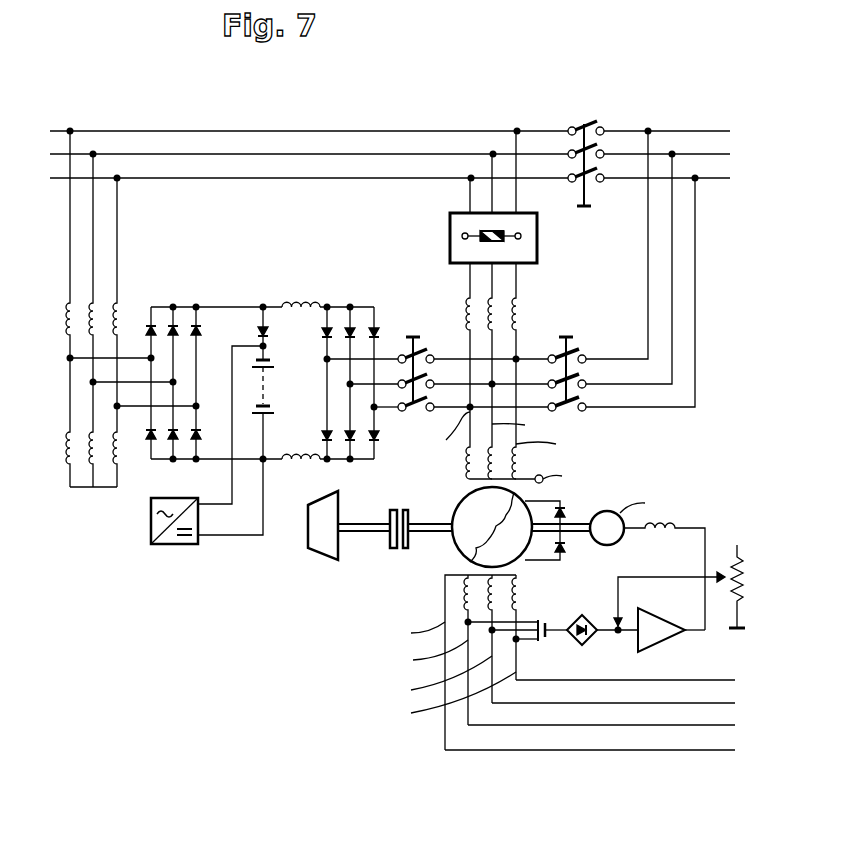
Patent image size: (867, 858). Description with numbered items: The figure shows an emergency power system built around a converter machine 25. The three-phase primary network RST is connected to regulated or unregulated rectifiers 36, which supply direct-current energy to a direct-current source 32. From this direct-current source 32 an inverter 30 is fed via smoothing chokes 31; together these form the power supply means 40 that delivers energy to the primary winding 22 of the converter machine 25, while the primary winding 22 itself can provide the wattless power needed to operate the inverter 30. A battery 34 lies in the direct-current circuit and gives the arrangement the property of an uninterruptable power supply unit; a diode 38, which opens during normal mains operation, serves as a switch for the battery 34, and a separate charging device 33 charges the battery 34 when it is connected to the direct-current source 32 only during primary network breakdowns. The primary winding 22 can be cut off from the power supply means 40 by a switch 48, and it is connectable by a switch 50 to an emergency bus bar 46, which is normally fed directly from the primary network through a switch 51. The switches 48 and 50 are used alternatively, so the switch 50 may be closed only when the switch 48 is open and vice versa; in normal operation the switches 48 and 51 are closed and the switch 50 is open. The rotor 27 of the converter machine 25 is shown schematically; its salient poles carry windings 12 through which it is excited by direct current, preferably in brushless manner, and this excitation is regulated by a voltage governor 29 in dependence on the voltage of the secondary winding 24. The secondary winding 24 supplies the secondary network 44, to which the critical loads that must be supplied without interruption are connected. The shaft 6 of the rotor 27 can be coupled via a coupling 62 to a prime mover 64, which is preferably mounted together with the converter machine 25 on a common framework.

The shaft 6 is at (362, 533).
The windings 12 is at (458, 533).
The primary winding 22 is at (468, 468).
The secondary winding 24 is at (520, 590).
The converter machine 25 is at (592, 508).
The rotor 27 is at (464, 548).
The voltage governor 29 is at (662, 632).
The inverter 30 is at (350, 304).
The smoothing chokes 31 is at (293, 302).
The direct-current source 32 is at (262, 304).
The charging device 33 is at (170, 546).
The battery 34 is at (267, 388).
The rectifiers 36 is at (174, 305).
The diode 38 is at (268, 336).
The power supply means 40 is at (210, 298).
The secondary network 44 is at (652, 756).
The emergency bus bar 46 is at (707, 127).
The switch 48 is at (421, 349).
The switch 50 is at (576, 348).
The switch 51 is at (581, 126).
The coupling 62 is at (400, 549).
The prime mover 64 is at (325, 547).